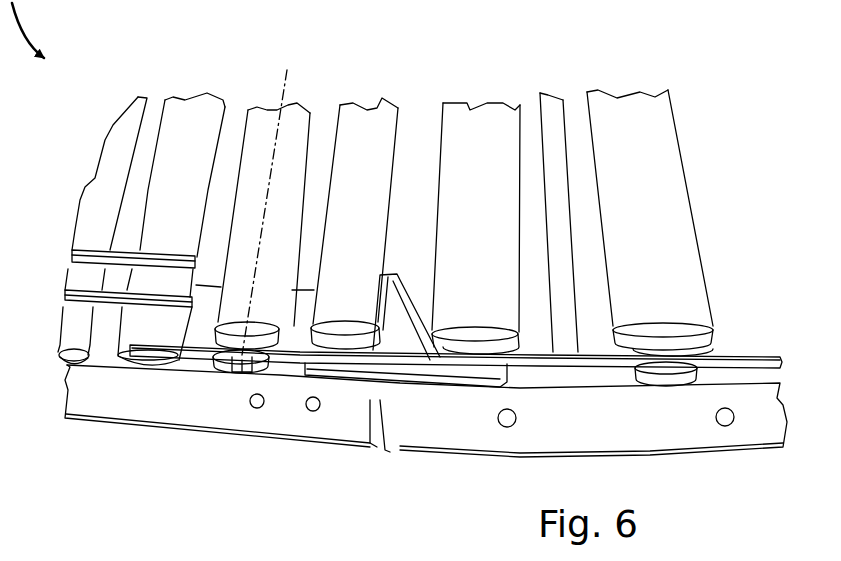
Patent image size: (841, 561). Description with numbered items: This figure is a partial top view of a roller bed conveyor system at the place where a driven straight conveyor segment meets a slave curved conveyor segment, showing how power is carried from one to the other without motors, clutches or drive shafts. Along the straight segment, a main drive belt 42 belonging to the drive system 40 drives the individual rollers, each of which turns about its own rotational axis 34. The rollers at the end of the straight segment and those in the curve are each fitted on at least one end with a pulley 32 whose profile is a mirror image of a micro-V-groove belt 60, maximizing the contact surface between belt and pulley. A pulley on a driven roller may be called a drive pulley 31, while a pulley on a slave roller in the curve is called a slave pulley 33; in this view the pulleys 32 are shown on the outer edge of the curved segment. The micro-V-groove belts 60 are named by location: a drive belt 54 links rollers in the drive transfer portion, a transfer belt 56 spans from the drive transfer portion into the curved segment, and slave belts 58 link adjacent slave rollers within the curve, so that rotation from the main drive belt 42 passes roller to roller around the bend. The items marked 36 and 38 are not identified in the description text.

The drive pulley 31 is at (227, 346).
The pulley 32 is at (241, 362).
The slave pulley 33 is at (694, 383).
The rotational axis 34 is at (283, 83).
The battery cell 36 is at (183, 123).
The battery cell 38 is at (217, 163).
The drive system 40 is at (174, 339).
The main drive belt 42 is at (199, 337).
The drive belt 54 is at (294, 368).
The transfer belt 56 is at (397, 367).
The slave belt 58 is at (558, 350).
The micro-V-groove belt 60 is at (293, 343).